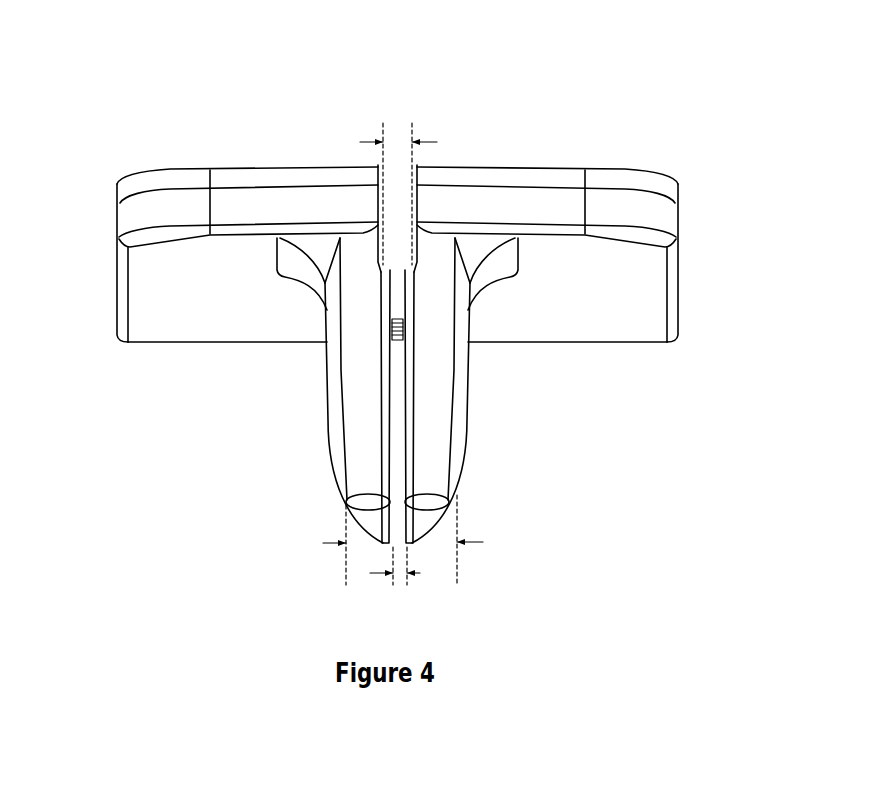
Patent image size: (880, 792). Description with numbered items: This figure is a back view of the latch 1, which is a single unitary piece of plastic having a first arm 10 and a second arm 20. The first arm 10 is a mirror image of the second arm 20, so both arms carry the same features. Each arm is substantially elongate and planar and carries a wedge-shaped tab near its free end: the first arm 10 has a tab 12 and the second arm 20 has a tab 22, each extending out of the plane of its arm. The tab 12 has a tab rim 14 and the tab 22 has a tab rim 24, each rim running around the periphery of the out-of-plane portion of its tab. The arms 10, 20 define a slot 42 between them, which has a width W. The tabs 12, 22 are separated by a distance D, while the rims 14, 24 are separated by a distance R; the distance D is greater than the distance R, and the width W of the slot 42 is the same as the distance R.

The latch 1 is at (553, 78).
The first arm 10 is at (640, 283).
The tab 12 is at (437, 368).
The tab rim 14 is at (428, 410).
The second arm 20 is at (153, 283).
The tab 22 is at (362, 370).
The tab rim 24 is at (378, 412).
The slot 42 is at (397, 205).